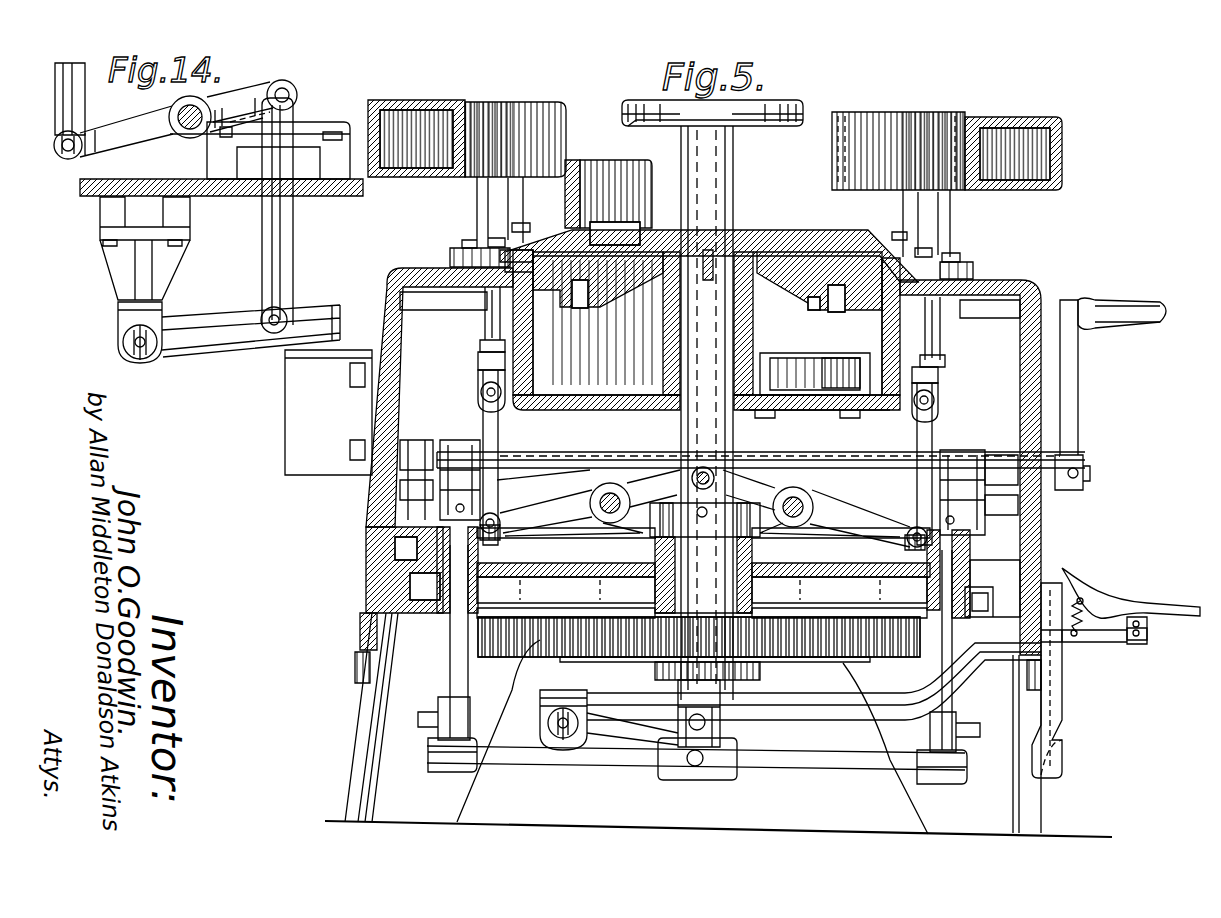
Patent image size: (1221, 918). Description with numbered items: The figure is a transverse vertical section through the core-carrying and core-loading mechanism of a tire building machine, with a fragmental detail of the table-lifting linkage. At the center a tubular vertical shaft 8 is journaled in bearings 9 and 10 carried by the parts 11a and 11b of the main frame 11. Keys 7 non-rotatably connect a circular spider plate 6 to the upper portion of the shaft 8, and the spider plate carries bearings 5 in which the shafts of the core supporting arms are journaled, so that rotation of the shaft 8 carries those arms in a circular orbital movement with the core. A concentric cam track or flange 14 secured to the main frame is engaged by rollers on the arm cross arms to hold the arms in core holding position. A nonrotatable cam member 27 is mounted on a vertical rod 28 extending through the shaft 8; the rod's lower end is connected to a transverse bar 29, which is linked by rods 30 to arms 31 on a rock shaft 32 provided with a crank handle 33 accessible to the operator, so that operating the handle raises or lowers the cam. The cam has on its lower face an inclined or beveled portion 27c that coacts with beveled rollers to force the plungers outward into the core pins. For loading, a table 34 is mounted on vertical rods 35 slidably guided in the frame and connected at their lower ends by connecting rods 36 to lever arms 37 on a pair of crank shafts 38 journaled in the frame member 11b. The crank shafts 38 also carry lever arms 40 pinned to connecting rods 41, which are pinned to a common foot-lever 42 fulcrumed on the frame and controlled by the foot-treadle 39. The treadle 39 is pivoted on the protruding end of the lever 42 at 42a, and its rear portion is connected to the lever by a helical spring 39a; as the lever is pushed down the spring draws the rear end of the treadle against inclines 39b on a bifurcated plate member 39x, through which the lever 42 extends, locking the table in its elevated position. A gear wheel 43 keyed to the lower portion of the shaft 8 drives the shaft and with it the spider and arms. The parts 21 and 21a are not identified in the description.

In FIG. 5, the bearings 5 is at (628, 298).
In FIG. 5, the circular spider plate 6 is at (758, 240).
In FIG. 5, the keys 7 is at (707, 413).
In FIG. 5, the tubular vertical shaft 8 is at (680, 422).
In FIG. 5, the bearing 9 is at (663, 357).
In FIG. 5, the bearing 10 is at (656, 548).
In FIG. 5, the main frame 11 is at (1042, 385).
In FIG. 5, the main frame part 11a is at (612, 405).
In FIG. 5, the main frame member 11b is at (770, 588).
In FIG. 5, the cam track or flange 14 is at (618, 200).
In FIG. 5, the carrier 21 is at (788, 385).
In FIG. 5, the carrier block 21a is at (842, 372).
In FIG. 5, the cam member 27 is at (770, 128).
In FIG. 5, the inclined or beveled portion 27c is at (664, 122).
In FIG. 5, the vertical rod 28 is at (682, 440).
In FIG. 5, the transverse rod or bar 29 is at (796, 762).
In FIG. 5, the rods 30 is at (451, 662).
In FIG. 5, the arms 31 is at (467, 448).
In FIG. 5, the rock shaft 32 is at (822, 468).
In FIG. 5, the crank handle 33 is at (1108, 300).
In FIG. 5, the table 34 is at (418, 110).
In FIG. 5, the vertical rods 35 is at (484, 314).
In FIG. 14, the links or connecting rods 36 is at (72, 94).
In FIG. 5, the links or connecting rods 36 is at (488, 420).
In FIG. 14, the lever arms 37 is at (136, 130).
In FIG. 5, the lever arms 37 is at (560, 508).
In FIG. 14, the crank shafts 38 is at (190, 138).
In FIG. 5, the crank shafts 38 is at (610, 482).
In FIG. 5, the foot-treadle 39 is at (1107, 603).
In FIG. 5, the helical spring 39a is at (1085, 618).
In FIG. 5, the bifurcated plate member 39x is at (1062, 695).
In FIG. 5, the inclines 39b is at (1062, 738).
In FIG. 14, the lever arms 40 is at (243, 93).
In FIG. 5, the lever arms 40 is at (760, 486).
In FIG. 14, the connecting rods 41 is at (268, 228).
In FIG. 5, the connecting rods 41 is at (677, 700).
In FIG. 14, the foot-lever 42 is at (251, 350).
In FIG. 5, the foot-lever 42 is at (820, 700).
In FIG. 5, the pivot of treadle on lever 42a is at (1147, 636).
In FIG. 5, the gear wheel 43 is at (520, 650).